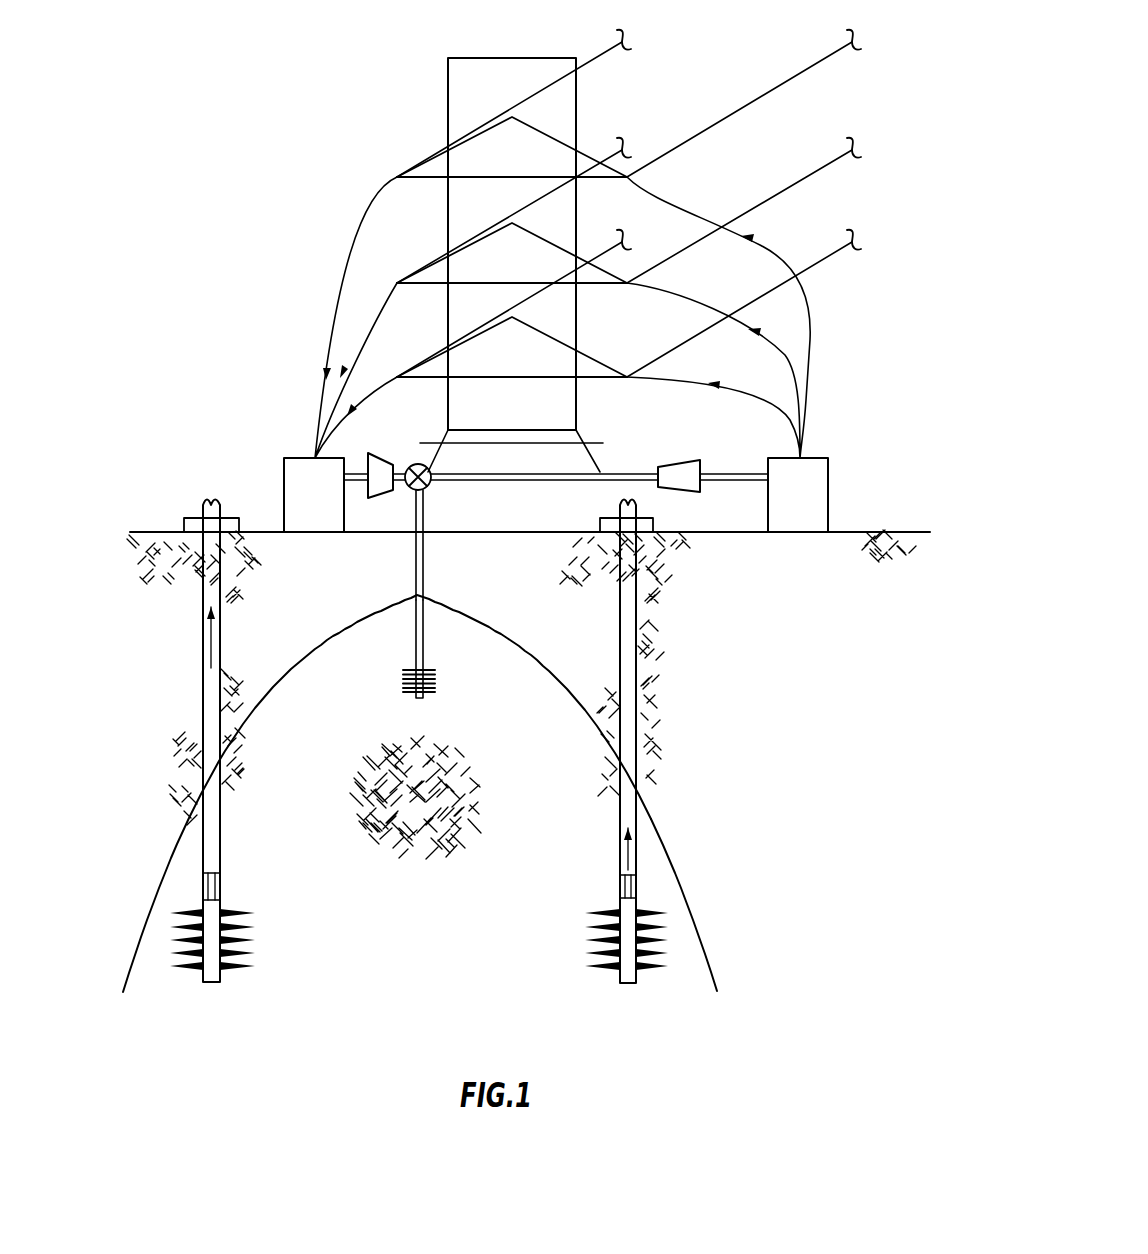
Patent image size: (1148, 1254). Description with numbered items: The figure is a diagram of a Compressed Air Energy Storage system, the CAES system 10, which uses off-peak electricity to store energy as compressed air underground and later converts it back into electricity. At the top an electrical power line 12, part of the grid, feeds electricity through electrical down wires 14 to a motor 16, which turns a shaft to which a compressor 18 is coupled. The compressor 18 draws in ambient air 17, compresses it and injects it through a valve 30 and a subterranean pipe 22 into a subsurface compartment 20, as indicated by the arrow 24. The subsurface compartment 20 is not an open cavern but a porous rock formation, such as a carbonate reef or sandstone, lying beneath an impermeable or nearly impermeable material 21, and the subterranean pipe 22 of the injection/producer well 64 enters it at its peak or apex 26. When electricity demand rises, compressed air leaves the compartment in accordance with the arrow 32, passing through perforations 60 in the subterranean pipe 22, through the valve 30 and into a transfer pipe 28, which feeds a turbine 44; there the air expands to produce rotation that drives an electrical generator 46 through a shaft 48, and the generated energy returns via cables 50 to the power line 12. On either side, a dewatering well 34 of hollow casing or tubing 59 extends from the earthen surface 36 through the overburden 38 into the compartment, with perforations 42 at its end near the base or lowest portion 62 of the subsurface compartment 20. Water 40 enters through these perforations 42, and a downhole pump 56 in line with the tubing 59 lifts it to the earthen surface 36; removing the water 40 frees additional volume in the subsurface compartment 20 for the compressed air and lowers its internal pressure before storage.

The CAES system 10 is at (222, 250).
The electrical power line 12 is at (405, 68).
The electrical down wires 14 is at (390, 381).
The motor 16 is at (295, 458).
The ambient air 17 is at (358, 465).
The compressor 18 is at (380, 498).
The subsurface compartment 20 is at (412, 816).
The impermeable material 21 is at (138, 843).
The subterranean pipe 22 is at (425, 557).
The arrow 24 is at (373, 723).
The apex 26 is at (425, 594).
The transfer pipe 28 is at (555, 481).
The valve 30 is at (432, 490).
The arrow 32 is at (446, 706).
The dewatering well 34 is at (248, 612).
The earthen surface 36 is at (155, 530).
The overburden 38 is at (733, 578).
The water 40 is at (182, 462).
The perforations 42 is at (185, 955).
The turbine 44 is at (680, 460).
The electrical generator 46 is at (830, 470).
The shaft 48 is at (725, 474).
The cables 50 is at (747, 392).
The downhole pump 56 is at (222, 885).
The tubing 59 is at (222, 658).
The perforations 60 is at (438, 690).
The lowest portion 62 is at (715, 986).
The injection/producer well 64 is at (402, 584).